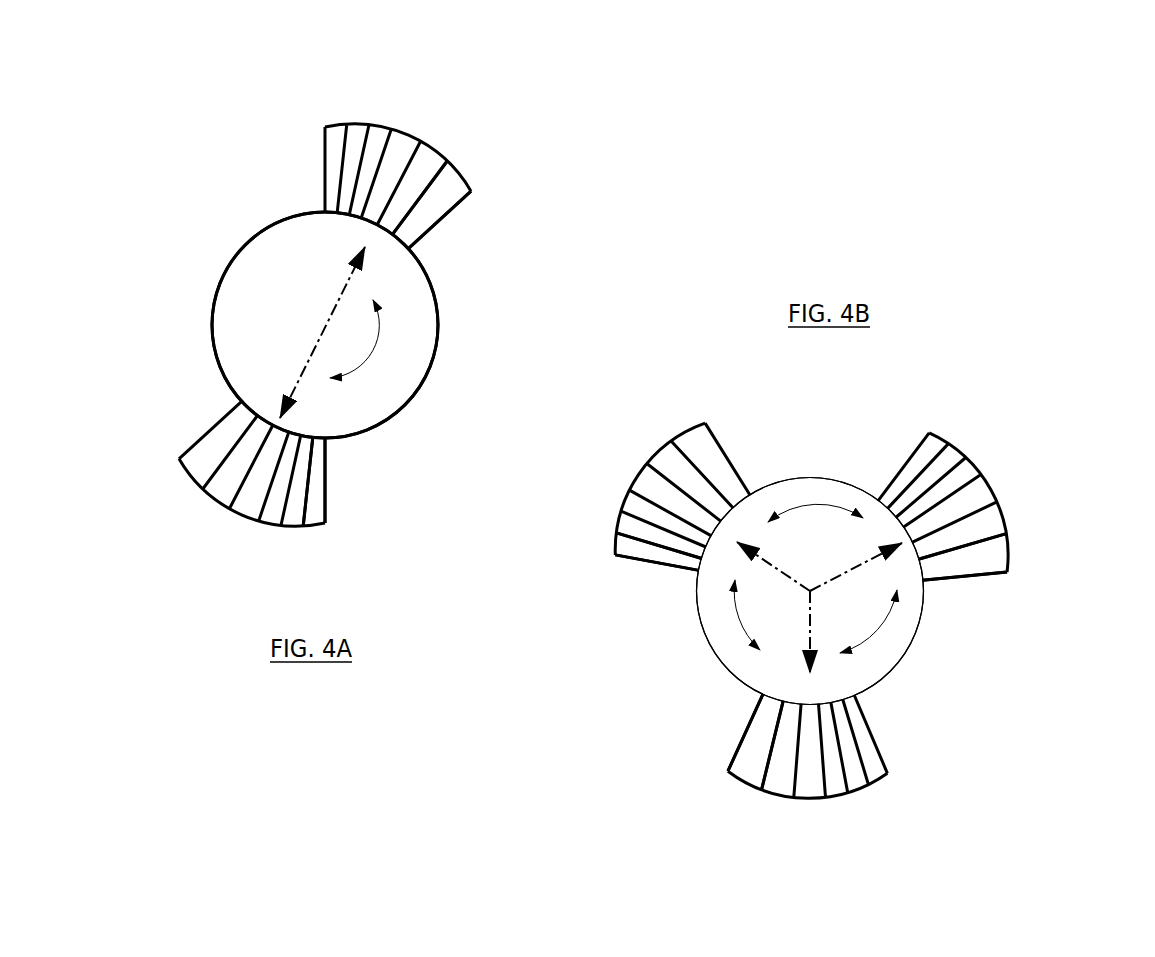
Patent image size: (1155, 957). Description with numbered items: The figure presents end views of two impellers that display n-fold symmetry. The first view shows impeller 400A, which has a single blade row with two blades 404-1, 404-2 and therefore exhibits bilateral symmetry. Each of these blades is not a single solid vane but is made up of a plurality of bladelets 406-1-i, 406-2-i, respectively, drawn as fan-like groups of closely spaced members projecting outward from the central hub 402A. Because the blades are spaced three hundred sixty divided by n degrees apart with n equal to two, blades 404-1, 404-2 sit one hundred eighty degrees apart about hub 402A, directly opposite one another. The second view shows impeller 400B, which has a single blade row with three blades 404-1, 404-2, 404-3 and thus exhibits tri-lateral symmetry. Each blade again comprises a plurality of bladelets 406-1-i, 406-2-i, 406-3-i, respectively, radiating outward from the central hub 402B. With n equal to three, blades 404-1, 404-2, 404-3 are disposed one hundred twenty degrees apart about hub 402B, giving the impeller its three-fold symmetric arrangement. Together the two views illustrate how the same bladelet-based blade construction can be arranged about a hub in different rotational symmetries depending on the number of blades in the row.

In FIG. 4A, the impeller 400A is at (205, 180).
In FIG. 4A, the hub 402A is at (288, 302).
In FIG. 4A, the blade 404-1 is at (418, 125).
In FIG. 4B, the blade 404-1 is at (668, 406).
In FIG. 4A, the blade 404-2 is at (215, 530).
In FIG. 4B, the blade 404-2 is at (1002, 455).
In FIG. 4B, the blade 404-3 is at (866, 810).
In FIG. 4A, the bladelets 406-1-i is at (456, 187).
In FIG. 4B, the bladelets 406-1-i is at (668, 560).
In FIG. 4A, the bladelets 406-2-i is at (318, 505).
In FIG. 4B, the bladelets 406-2-i is at (958, 568).
In FIG. 4B, the bladelets 406-3-i is at (750, 780).
In FIG. 4B, the impeller 400B is at (960, 390).
In FIG. 4B, the hub 402B is at (715, 660).